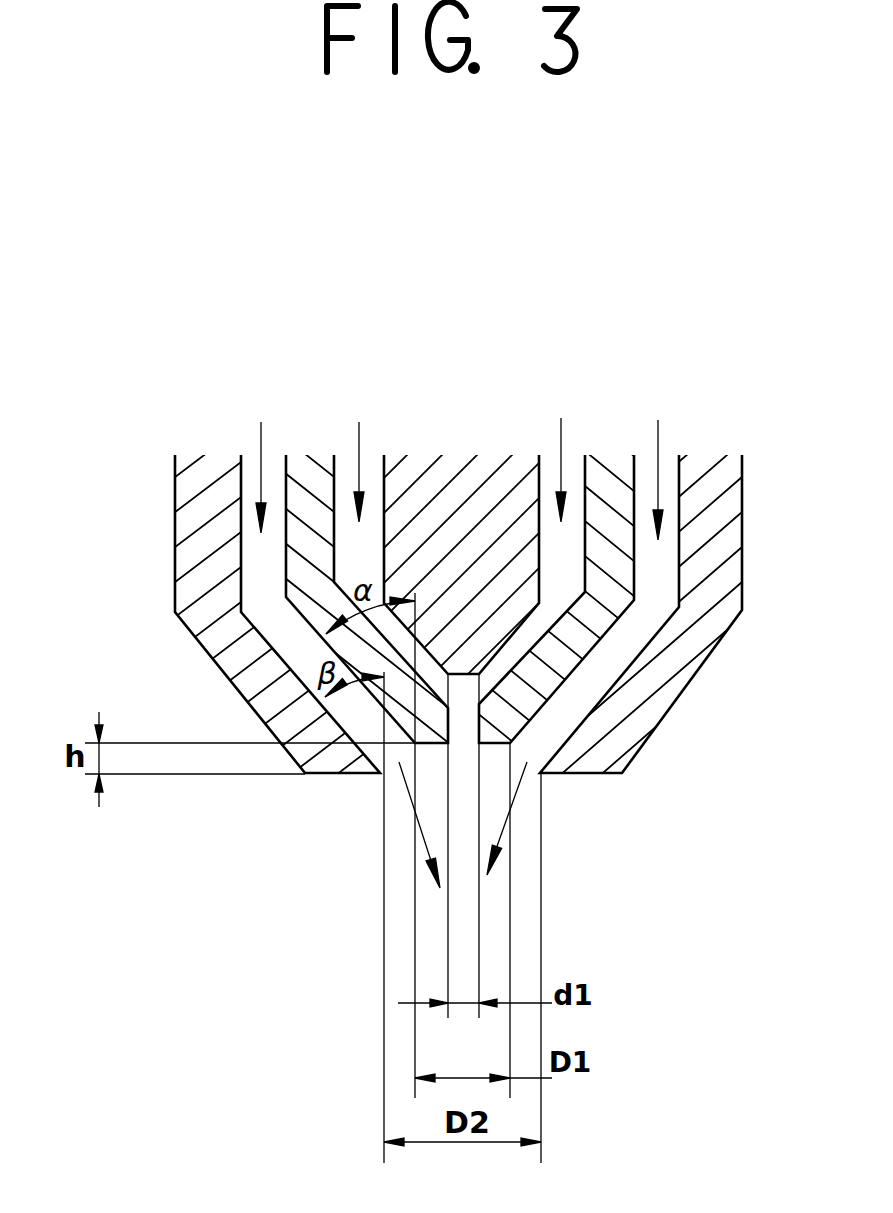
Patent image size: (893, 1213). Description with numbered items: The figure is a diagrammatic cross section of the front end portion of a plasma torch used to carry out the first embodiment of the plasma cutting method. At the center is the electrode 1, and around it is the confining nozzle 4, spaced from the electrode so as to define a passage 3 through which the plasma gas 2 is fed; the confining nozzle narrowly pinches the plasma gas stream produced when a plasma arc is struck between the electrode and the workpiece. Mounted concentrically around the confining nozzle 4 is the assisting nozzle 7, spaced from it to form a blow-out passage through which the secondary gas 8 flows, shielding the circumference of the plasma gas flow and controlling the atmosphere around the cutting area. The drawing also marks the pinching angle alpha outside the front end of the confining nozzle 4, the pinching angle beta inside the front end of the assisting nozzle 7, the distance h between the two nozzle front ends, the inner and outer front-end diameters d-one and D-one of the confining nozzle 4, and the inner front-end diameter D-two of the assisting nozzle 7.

The electrode 1 is at (445, 473).
The plasma gas 2 is at (563, 447).
The passage 3 is at (342, 477).
The confining nozzle 4 is at (580, 638).
The assisting nozzle 7 is at (635, 728).
The secondary gas 8 is at (660, 430).